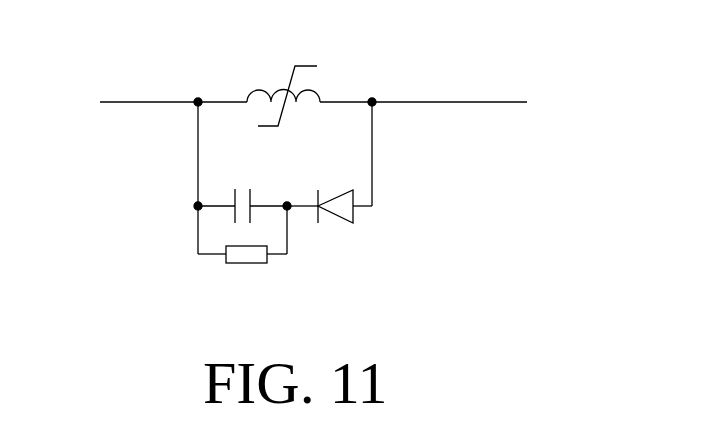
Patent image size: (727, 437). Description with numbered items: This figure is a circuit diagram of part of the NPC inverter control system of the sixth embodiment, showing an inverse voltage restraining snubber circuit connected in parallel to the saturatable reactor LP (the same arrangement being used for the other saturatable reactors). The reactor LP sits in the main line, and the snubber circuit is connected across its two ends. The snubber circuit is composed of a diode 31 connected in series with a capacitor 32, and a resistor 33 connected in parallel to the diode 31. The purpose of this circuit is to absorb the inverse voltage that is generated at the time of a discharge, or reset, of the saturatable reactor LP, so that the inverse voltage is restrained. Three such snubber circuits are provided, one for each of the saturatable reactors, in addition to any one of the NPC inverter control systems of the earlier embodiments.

The saturatable reactor LP is at (332, 79).
The diode 31 is at (333, 225).
The capacitor 32 is at (252, 181).
The resistor 33 is at (255, 265).